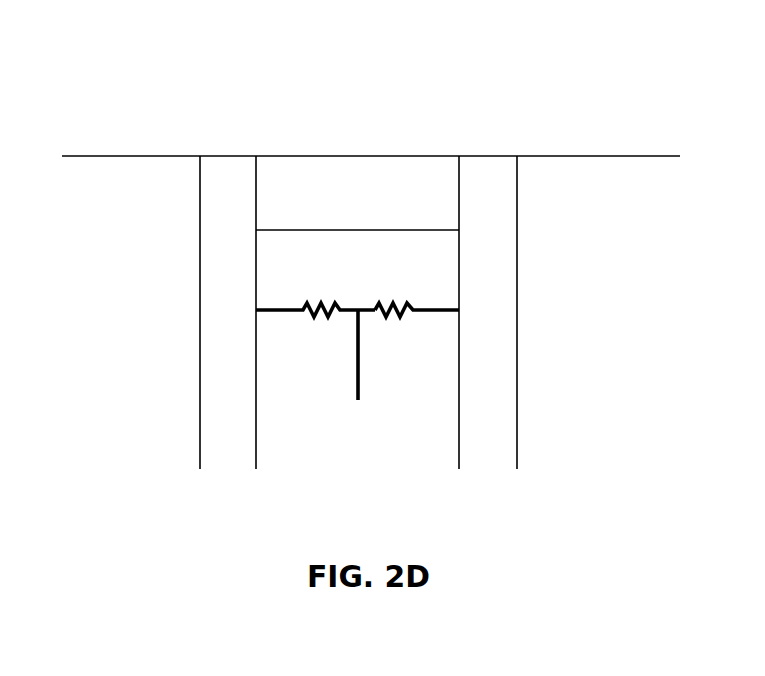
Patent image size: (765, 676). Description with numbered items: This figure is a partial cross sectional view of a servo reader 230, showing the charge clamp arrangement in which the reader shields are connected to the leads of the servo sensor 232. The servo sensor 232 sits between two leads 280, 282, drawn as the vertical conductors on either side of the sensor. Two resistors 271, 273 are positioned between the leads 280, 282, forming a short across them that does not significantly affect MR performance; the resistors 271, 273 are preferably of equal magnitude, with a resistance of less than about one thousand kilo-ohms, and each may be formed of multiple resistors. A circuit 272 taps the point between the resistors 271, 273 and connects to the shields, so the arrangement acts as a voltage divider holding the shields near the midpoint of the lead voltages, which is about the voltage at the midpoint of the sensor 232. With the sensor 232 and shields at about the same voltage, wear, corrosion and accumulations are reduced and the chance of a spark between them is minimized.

The servo reader 230 is at (126, 100).
The servo sensor 232 is at (337, 156).
The lead 280 is at (199, 283).
The lead 282 is at (517, 287).
The resistor 271 is at (320, 300).
The resistor 273 is at (391, 300).
The circuit 272 is at (359, 348).